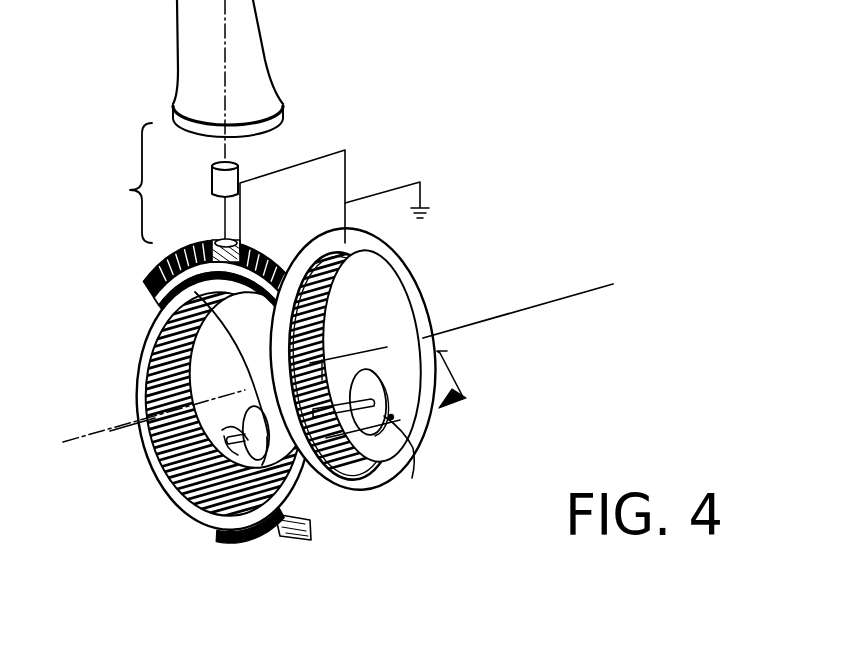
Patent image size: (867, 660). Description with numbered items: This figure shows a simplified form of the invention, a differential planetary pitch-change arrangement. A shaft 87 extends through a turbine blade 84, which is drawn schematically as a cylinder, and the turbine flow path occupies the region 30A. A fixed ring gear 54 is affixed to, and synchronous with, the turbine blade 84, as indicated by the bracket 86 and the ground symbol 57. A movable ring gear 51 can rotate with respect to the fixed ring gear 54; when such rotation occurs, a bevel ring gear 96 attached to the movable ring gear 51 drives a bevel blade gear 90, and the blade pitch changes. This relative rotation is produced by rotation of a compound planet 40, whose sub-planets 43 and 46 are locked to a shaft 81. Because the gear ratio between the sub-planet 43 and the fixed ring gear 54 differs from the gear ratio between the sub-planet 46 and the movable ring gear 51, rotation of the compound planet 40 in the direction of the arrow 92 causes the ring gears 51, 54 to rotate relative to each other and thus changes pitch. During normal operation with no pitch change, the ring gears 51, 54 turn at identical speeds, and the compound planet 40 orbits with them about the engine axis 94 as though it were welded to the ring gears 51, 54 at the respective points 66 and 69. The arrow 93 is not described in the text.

The turbine flow path region 30A is at (133, 165).
The turbine blade 84 is at (220, 179).
The shaft 87 is at (223, 222).
The bevel blade gear 90 is at (230, 240).
The bevel ring gear 96 is at (252, 259).
The bracket 86 is at (348, 160).
The ground symbol 57 is at (440, 190).
The fixed ring gear 54 is at (381, 275).
The movable ring gear 51 is at (246, 329).
The sub-planet 46 is at (208, 500).
The rotation direction arrow 93 is at (303, 332).
The shaft 81 is at (320, 374).
The point 69 is at (393, 418).
The sub-planet 43 is at (392, 447).
The compound planet 40 is at (450, 370).
The point 66 is at (298, 511).
The arrow 92 is at (246, 396).
The engine axis 94 is at (114, 420).